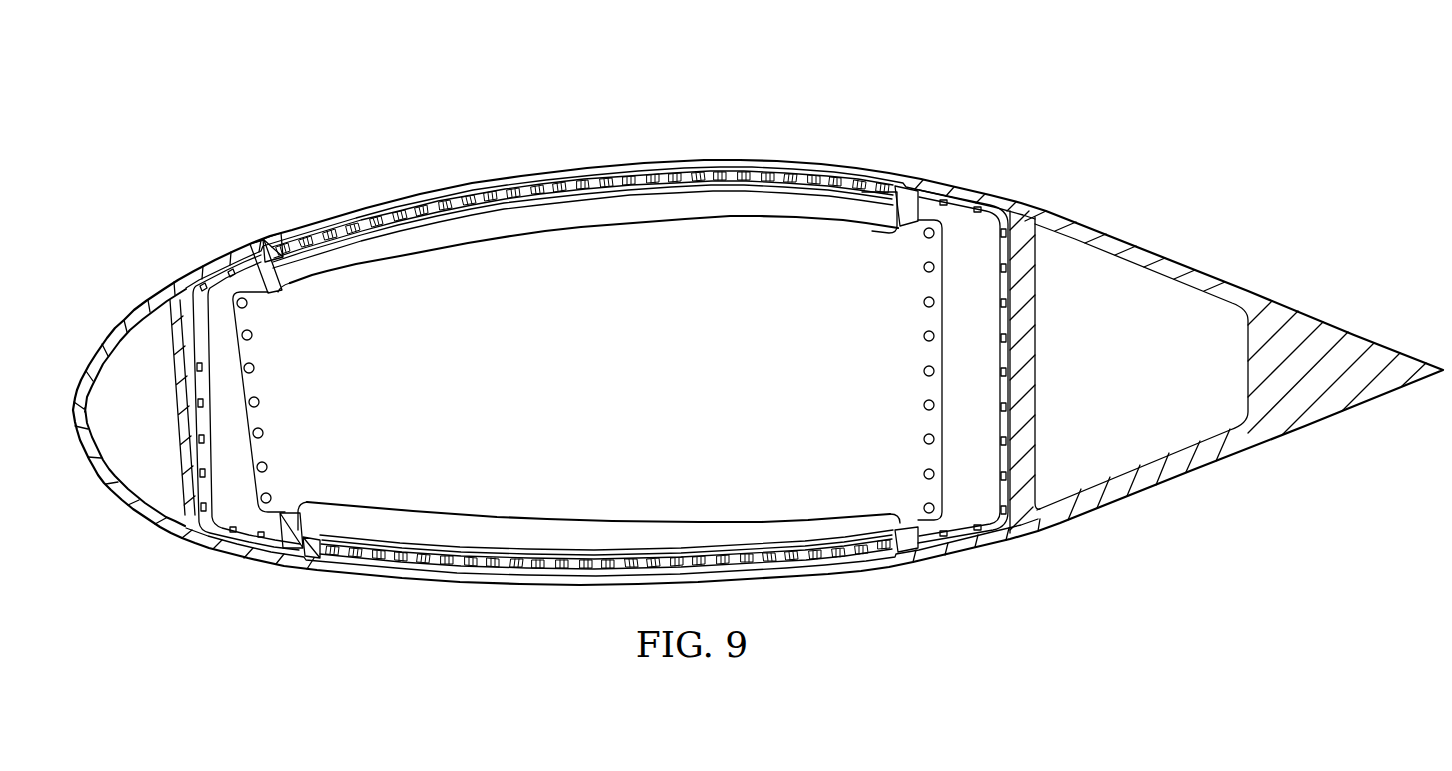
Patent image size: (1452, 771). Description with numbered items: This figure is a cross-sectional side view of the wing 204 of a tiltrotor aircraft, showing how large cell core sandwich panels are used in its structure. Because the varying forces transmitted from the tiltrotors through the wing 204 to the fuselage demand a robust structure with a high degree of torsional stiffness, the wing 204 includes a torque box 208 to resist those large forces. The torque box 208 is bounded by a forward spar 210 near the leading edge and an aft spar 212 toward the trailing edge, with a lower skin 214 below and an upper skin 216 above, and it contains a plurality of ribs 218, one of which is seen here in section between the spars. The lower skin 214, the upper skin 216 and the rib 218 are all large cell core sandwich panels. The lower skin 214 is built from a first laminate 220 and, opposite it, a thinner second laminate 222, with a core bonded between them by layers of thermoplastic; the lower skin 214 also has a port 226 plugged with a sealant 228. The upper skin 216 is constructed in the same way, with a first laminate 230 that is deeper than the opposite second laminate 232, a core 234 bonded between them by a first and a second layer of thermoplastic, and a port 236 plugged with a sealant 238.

The wing 204 is at (1118, 115).
The torque box 208 is at (214, 249).
The forward spar 210 is at (177, 407).
The aft spar 212 is at (1037, 388).
The lower skin 214 is at (517, 577).
The upper skin 216 is at (443, 190).
The rib 218 is at (590, 388).
The first laminate 220 is at (427, 558).
The second laminate 222 is at (452, 548).
The port 226 is at (840, 553).
The sealant 228 is at (847, 560).
The first laminate 230 is at (523, 180).
The second laminate 232 is at (463, 212).
The core 234 is at (663, 173).
The port 236 is at (843, 187).
The sealant 238 is at (847, 177).